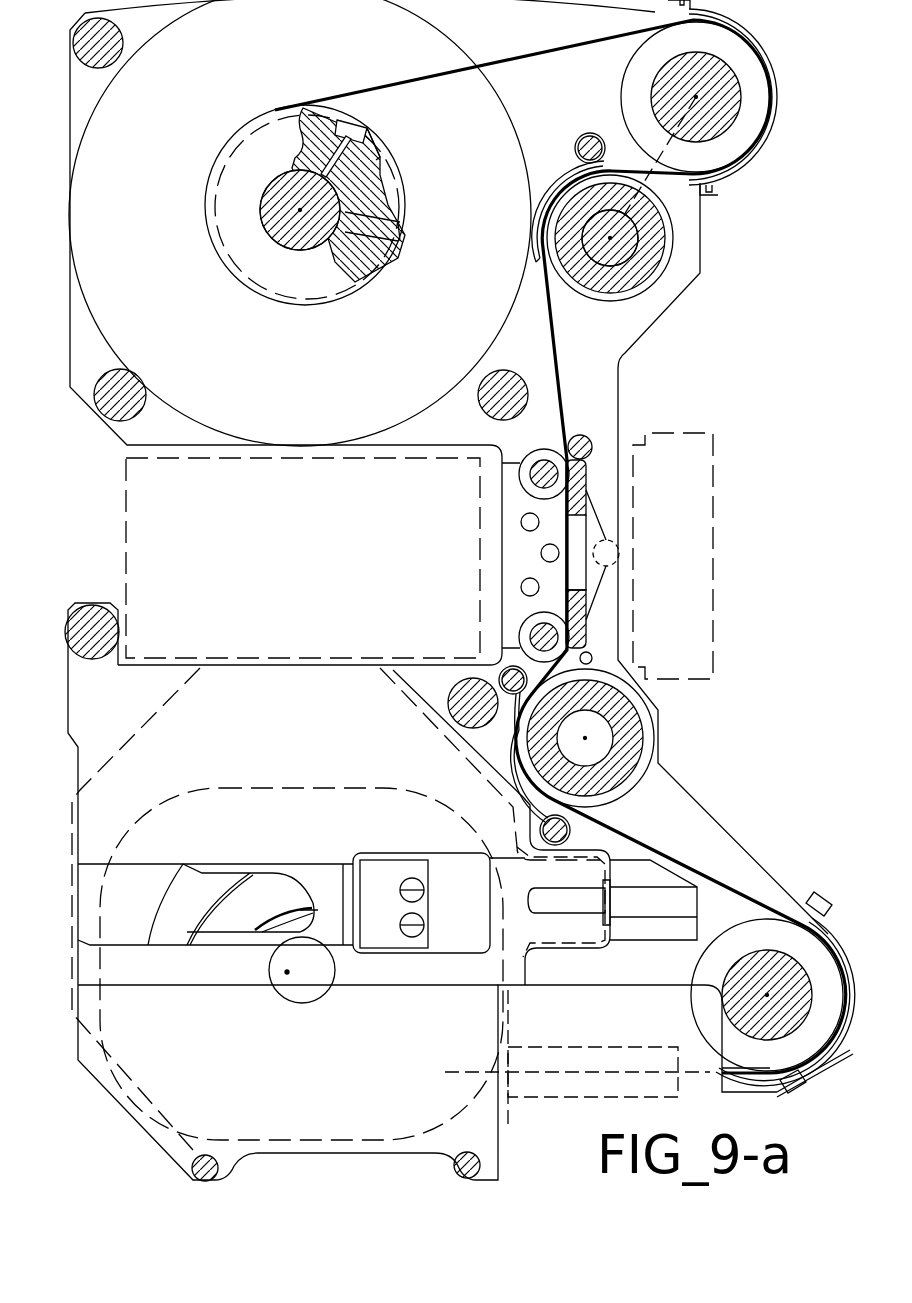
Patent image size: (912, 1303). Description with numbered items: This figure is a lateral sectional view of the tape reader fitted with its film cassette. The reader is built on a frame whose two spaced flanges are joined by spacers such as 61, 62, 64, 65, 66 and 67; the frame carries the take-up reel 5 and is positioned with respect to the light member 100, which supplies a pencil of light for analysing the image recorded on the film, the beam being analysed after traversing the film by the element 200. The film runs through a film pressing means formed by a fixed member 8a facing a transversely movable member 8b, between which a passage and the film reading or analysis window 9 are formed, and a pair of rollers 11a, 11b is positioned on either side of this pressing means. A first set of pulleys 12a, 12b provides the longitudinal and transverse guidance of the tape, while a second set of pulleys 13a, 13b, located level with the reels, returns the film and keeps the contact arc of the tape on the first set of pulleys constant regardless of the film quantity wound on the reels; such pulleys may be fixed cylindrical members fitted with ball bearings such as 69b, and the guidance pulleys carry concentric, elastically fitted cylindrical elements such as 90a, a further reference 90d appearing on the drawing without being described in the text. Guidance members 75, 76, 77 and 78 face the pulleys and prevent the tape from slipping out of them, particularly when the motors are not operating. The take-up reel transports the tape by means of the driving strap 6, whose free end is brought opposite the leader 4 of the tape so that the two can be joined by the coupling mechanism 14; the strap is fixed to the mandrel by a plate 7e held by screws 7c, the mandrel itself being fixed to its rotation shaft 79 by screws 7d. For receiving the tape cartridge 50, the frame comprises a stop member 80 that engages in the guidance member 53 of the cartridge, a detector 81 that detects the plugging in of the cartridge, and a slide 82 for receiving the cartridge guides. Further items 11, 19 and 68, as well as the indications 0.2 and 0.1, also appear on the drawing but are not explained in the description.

The leader 4 is at (738, 1078).
The take-up reel 5 is at (505, 120).
The driving strap 6 is at (540, 52).
The screws 7c is at (356, 132).
The screws 7d is at (396, 238).
The plate 7e is at (380, 160).
The fixed member 8a is at (520, 577).
The transversely movable member 8b is at (586, 646).
The film reading window 9 is at (596, 580).
The pivot 11 is at (604, 540).
The roller 11a is at (530, 637).
The roller 11b is at (530, 474).
The pulley 12a is at (592, 760).
The pulley 12b is at (612, 292).
The pulley 13a is at (740, 955).
The pulley 13b is at (636, 88).
The coupling mechanism 14 is at (618, 935).
The slot 19 is at (615, 1085).
The tape cartridge 50 is at (160, 740).
The guidance member 53 is at (572, 952).
The spacer 61 is at (112, 58).
The spacer 62 is at (128, 402).
The spacer 64 is at (478, 690).
The spacer 65 is at (193, 1170).
The spacer 66 is at (480, 1165).
The spacer 67 is at (490, 408).
The mounting hole 68 is at (88, 645).
The ball bearing 69b is at (775, 938).
The guidance member 75 is at (808, 1068).
The guidance member 76 is at (520, 750).
The guidance member 77 is at (576, 160).
The guidance member 78 is at (760, 55).
The rotation shaft 79 is at (285, 240).
The stop member 80 is at (688, 945).
The detector 81 is at (382, 945).
The slide 82 is at (172, 928).
The cylindrical element 90a is at (626, 732).
The roller ring 90d is at (660, 246).
The light member 100 is at (306, 538).
The analysing element 200 is at (690, 533).
The dimension 0.2 is at (314, 231).
The dimension 0.1 is at (302, 970).